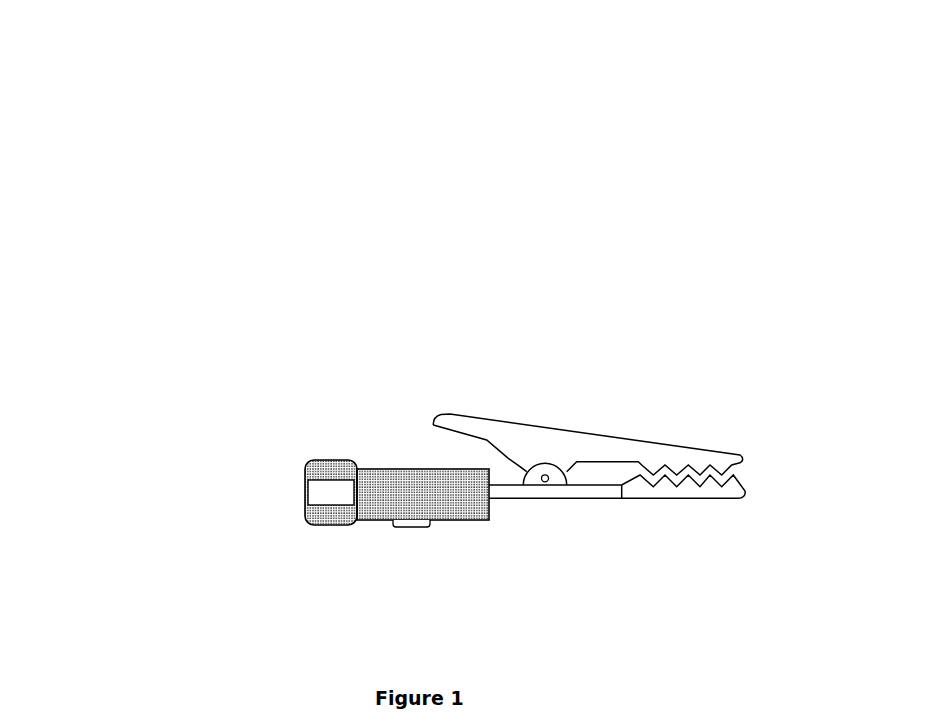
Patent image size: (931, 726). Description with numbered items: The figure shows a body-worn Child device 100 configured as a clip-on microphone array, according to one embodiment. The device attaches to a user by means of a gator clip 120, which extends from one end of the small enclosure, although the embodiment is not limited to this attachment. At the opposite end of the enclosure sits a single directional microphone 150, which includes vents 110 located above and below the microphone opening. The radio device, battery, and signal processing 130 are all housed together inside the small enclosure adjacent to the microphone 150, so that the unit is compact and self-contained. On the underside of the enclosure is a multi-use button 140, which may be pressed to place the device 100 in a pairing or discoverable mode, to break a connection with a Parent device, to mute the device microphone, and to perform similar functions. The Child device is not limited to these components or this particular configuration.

The wireless microphone device 100 is at (438, 120).
The vents 110 is at (292, 598).
The gator clip 120 is at (590, 428).
The radio device, battery, and signal processing 130 is at (457, 518).
The multi-use button 140 is at (412, 531).
The directional microphone 150 is at (298, 495).